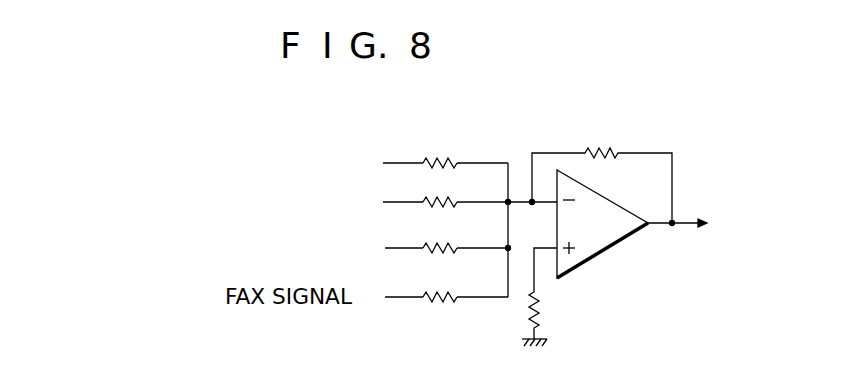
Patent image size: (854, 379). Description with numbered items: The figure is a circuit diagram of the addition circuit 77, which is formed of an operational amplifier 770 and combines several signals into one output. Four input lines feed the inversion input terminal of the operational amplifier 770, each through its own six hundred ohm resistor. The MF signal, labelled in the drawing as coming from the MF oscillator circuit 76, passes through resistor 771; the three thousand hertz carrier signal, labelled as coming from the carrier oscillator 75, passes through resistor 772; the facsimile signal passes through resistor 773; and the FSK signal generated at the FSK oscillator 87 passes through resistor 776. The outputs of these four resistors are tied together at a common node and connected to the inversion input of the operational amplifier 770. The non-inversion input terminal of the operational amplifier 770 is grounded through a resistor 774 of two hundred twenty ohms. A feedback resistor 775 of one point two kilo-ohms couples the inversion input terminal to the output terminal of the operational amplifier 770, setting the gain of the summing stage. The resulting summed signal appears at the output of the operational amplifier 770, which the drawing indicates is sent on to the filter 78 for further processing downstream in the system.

The addition circuit 77 is at (487, 151).
The FSK oscillator 87 is at (294, 163).
The MF oscillator circuit 76 is at (264, 202).
The 3000 Hz carrier oscillator 75 is at (230, 249).
The resistor 776 is at (423, 159).
The resistor 771 is at (428, 206).
The resistor 772 is at (425, 254).
The resistor 773 is at (427, 303).
The operational amplifier 770 is at (615, 233).
The resistor 775 is at (610, 158).
The resistor 774 is at (530, 308).
The filter 78 is at (719, 223).